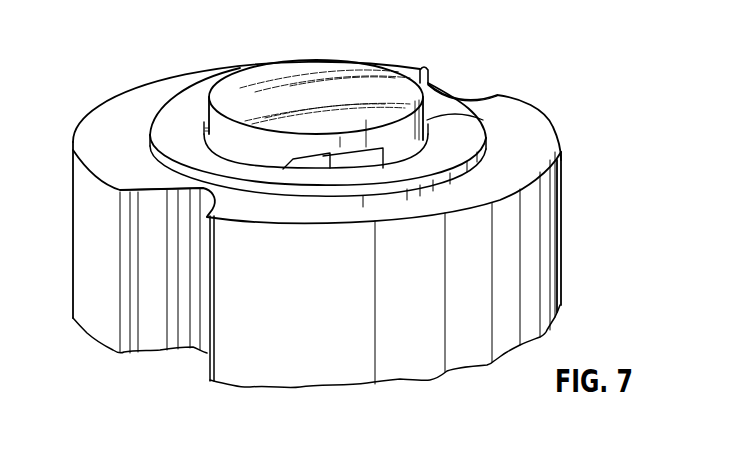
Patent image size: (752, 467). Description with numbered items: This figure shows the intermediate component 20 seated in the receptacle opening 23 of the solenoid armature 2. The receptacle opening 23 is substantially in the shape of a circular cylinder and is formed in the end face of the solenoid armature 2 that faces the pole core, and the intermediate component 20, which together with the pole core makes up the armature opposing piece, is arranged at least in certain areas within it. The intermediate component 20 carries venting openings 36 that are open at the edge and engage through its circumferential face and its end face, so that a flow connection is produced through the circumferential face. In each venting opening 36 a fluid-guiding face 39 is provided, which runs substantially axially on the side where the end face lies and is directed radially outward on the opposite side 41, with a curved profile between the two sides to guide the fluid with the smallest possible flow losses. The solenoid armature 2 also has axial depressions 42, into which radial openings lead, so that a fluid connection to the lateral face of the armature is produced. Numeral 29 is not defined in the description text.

The solenoid armature 2 is at (531, 133).
The intermediate component 20 is at (254, 67).
The receptacle opening 23 is at (520, 100).
The annular groove 29 is at (238, 104).
The venting opening 36 is at (371, 157).
The fluid-guiding face 39 is at (333, 160).
The side of the intermediate component facing away from the end face 41 is at (383, 52).
The axial depression 42 is at (437, 87).